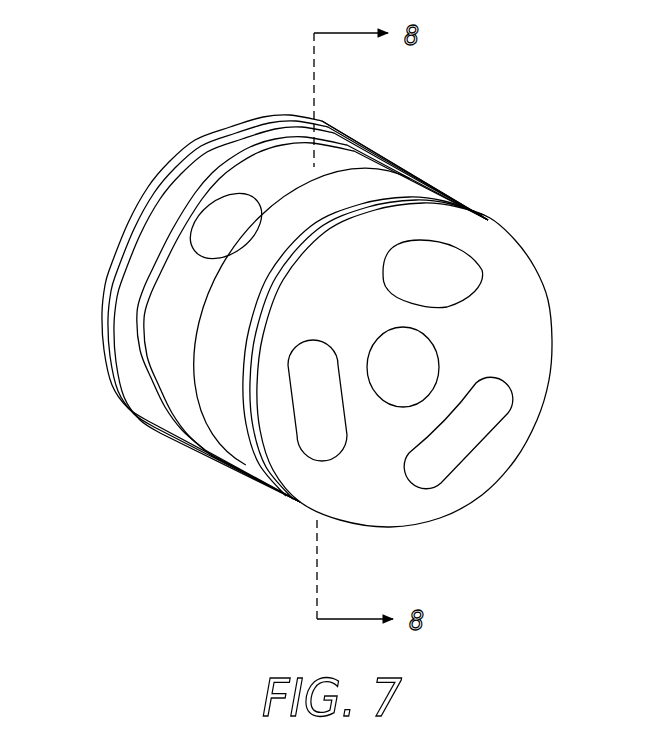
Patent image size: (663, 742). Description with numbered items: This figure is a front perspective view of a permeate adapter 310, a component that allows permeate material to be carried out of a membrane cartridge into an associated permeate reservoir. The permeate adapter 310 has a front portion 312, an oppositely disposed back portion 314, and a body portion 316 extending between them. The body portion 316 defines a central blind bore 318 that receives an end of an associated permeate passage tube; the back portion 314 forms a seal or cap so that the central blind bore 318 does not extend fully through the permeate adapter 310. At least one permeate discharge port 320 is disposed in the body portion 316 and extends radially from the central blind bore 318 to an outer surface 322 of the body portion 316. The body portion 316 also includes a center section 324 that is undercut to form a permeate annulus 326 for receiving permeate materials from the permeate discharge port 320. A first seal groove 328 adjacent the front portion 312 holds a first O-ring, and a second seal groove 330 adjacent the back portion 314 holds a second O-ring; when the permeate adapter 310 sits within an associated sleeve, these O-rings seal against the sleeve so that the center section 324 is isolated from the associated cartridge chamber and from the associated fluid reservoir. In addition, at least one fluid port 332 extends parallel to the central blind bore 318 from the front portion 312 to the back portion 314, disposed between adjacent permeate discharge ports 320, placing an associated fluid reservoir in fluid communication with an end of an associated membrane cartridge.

The permeate adapter 310 is at (440, 141).
The front portion 312 is at (520, 244).
The back portion 314 is at (103, 293).
The body portion 316 is at (430, 182).
The central blind bore 318 is at (420, 363).
The permeate discharge port 320 is at (217, 223).
The outer surface 322 is at (170, 367).
The center section 324 is at (188, 421).
The permeate annulus 326 is at (337, 157).
The first seal groove 328 is at (337, 230).
The second seal groove 330 is at (177, 174).
The fluid port 332 is at (458, 280).